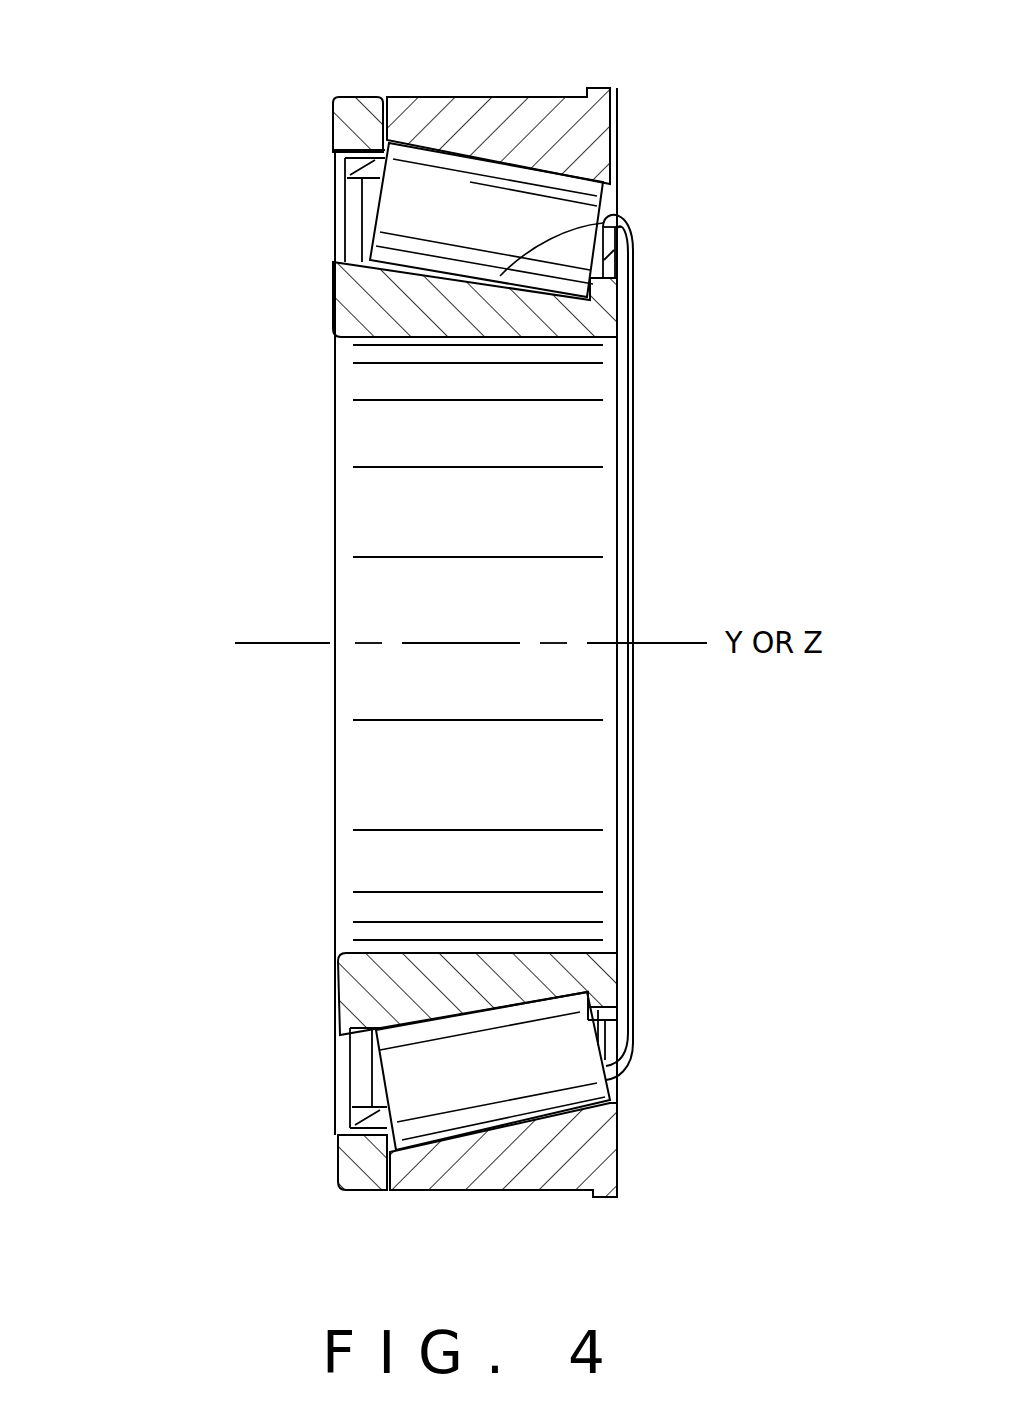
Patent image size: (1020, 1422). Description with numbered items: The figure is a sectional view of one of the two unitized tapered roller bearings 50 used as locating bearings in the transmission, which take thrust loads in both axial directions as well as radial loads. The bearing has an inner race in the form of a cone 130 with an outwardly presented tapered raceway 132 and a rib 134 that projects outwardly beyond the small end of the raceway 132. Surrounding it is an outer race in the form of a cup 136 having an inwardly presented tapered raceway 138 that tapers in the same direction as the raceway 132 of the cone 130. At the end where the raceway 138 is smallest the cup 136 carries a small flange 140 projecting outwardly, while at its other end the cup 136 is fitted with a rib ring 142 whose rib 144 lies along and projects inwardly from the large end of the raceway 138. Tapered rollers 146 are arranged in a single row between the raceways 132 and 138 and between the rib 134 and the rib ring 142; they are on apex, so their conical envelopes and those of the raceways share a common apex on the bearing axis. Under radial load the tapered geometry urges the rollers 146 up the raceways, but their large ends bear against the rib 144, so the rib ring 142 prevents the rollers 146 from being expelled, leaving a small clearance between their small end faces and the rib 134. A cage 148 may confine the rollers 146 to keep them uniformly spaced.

The unitized tapered roller bearing 50 is at (308, 450).
The cone 130 is at (350, 313).
The tapered raceway 132 is at (603, 223).
The rib 134 is at (590, 286).
The cup 136 is at (478, 1180).
The tapered raceway 138 is at (447, 1137).
The small flange 140 is at (613, 1198).
The rib ring 142 is at (343, 110).
The rib 144 is at (426, 138).
The tapered rollers 146 is at (538, 190).
The cage 148 is at (633, 1067).